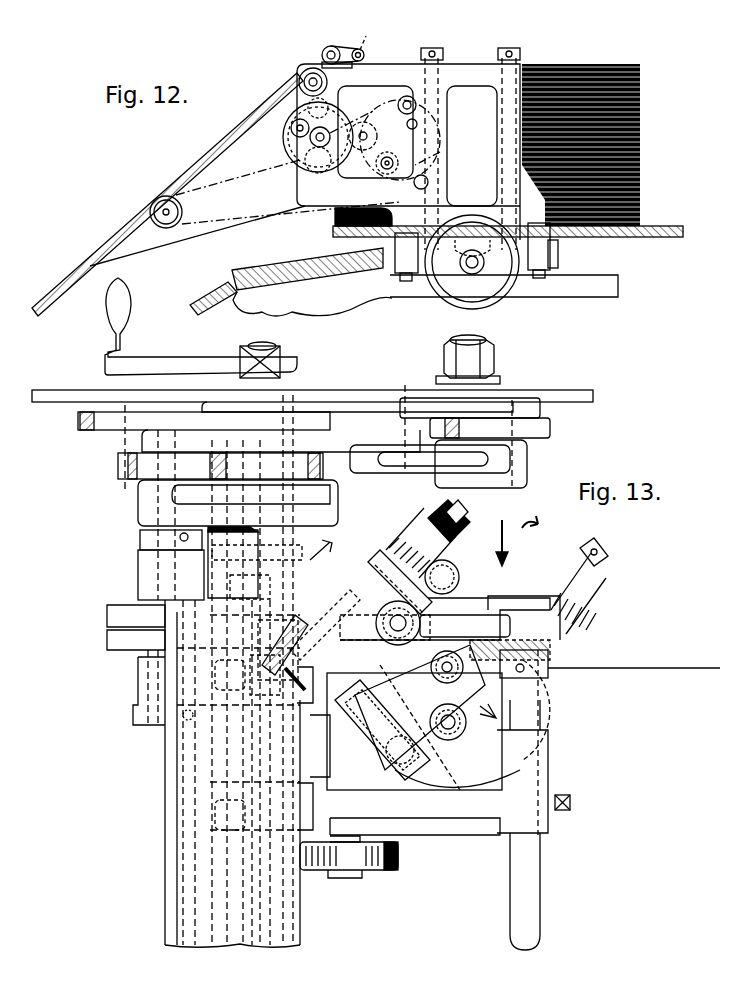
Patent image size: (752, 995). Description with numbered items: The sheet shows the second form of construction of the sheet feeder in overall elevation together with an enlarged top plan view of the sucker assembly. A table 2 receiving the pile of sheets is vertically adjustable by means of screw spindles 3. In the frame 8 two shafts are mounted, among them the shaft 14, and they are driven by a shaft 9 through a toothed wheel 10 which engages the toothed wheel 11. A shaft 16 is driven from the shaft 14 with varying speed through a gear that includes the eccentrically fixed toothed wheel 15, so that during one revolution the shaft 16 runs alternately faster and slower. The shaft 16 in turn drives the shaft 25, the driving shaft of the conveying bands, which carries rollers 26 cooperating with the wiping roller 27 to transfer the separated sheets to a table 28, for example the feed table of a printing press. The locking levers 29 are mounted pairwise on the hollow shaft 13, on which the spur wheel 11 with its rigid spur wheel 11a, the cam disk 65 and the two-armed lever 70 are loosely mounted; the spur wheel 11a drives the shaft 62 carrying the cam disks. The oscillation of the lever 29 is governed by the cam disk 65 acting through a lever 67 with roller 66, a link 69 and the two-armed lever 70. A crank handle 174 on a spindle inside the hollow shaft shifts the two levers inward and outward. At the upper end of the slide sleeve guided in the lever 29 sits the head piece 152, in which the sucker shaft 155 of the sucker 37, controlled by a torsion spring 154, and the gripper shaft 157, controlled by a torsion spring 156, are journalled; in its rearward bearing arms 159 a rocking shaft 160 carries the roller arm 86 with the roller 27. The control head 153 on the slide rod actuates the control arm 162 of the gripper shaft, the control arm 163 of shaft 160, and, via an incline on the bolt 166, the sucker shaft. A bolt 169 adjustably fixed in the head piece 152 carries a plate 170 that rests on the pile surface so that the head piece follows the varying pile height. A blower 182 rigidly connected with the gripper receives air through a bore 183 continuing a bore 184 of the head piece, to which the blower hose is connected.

In FIG. 12, the table 2 is at (645, 238).
In FIG. 12, the screw spindles 3 is at (506, 168).
In FIG. 12, the frame 8 is at (460, 66).
In FIG. 12, the shaft 9 is at (365, 130).
In FIG. 12, the toothed wheel 10 is at (360, 118).
In FIG. 12, the toothed wheel 11 is at (282, 112).
In FIG. 13, the toothed wheel 11 is at (108, 425).
In FIG. 13, the spur wheel 11a is at (325, 455).
In FIG. 12, the hollow shaft 13 is at (285, 80).
In FIG. 12, the shaft 14 is at (408, 95).
In FIG. 13, the toothed wheel 15 is at (280, 645).
In FIG. 12, the shaft 16 is at (378, 170).
In FIG. 13, the shaft 16 is at (408, 640).
In FIG. 12, the shaft 25 is at (164, 208).
In FIG. 12, the rollers 26 is at (302, 70).
In FIG. 12, the wiping roller 27 is at (326, 46).
In FIG. 13, the wiping roller 27 is at (388, 862).
In FIG. 12, the table 28 is at (218, 146).
In FIG. 12, the locking lever 29 is at (355, 32).
In FIG. 13, the sucker 37 is at (350, 700).
In FIG. 12, the shaft 62 is at (290, 140).
In FIG. 13, the cam disk 65 is at (157, 438).
In FIG. 13, the roller 66 is at (530, 432).
In FIG. 13, the lever 67 is at (520, 486).
In FIG. 13, the link 69 is at (430, 462).
In FIG. 13, the two-armed lever 70 is at (332, 498).
In FIG. 13, the roller arm 86 is at (447, 826).
In FIG. 13, the head piece 152 is at (390, 700).
In FIG. 13, the control head 153 is at (437, 674).
In FIG. 13, the torsion spring 154 is at (580, 598).
In FIG. 13, the sucker shaft 155 is at (594, 554).
In FIG. 13, the torsion spring 156 is at (418, 545).
In FIG. 13, the gripper shaft 157 is at (462, 512).
In FIG. 13, the bearing arms 159 is at (476, 612).
In FIG. 13, the rocking shaft 160 is at (532, 896).
In FIG. 13, the control arm 162 is at (446, 566).
In FIG. 13, the control arm 163 is at (490, 598).
In FIG. 13, the bolt 166 is at (522, 672).
In FIG. 13, the bolt 169 is at (447, 735).
In FIG. 13, the plate 170 is at (415, 782).
In FIG. 13, the crank handle 174 is at (158, 362).
In FIG. 13, the blower 182 is at (280, 670).
In FIG. 13, the bore 183 is at (340, 615).
In FIG. 13, the bore 184 is at (382, 568).